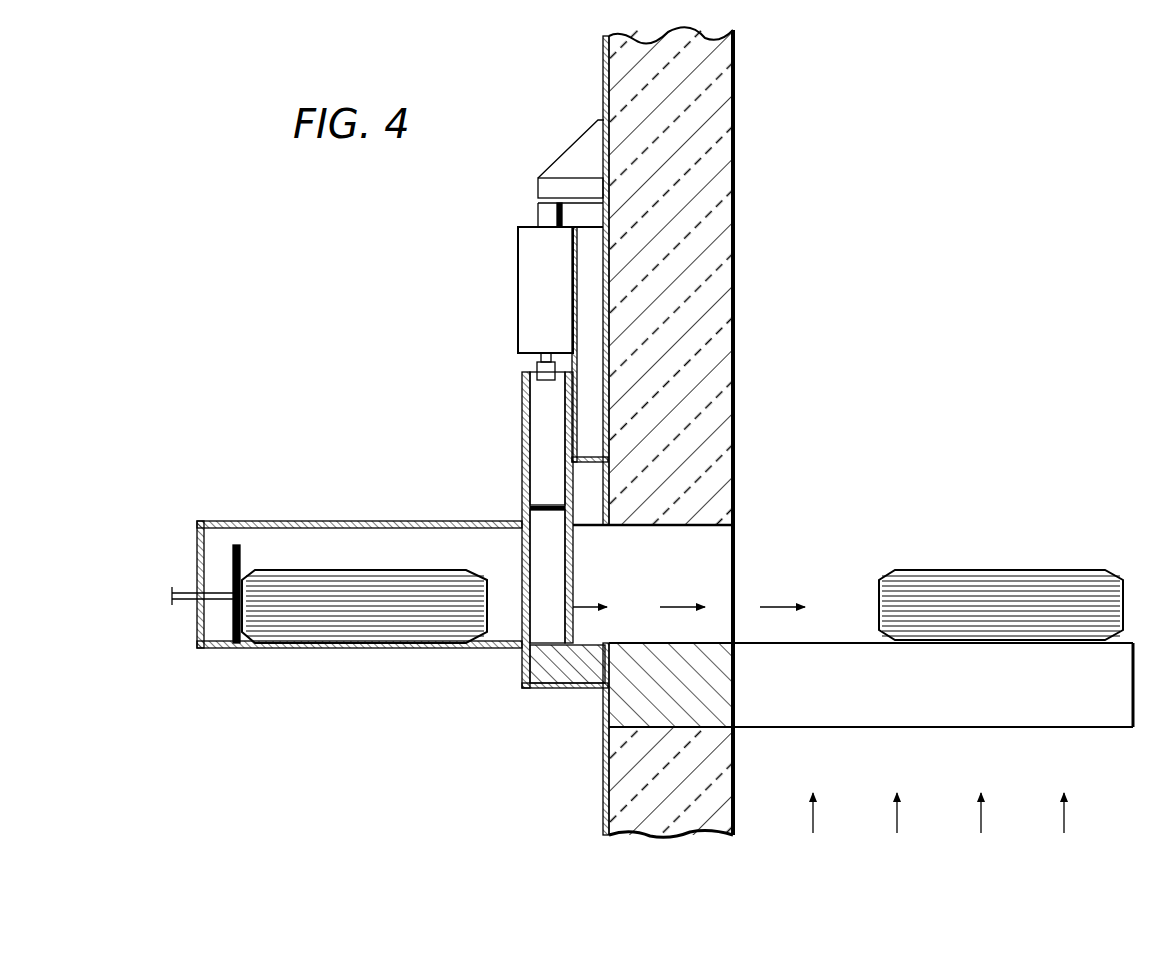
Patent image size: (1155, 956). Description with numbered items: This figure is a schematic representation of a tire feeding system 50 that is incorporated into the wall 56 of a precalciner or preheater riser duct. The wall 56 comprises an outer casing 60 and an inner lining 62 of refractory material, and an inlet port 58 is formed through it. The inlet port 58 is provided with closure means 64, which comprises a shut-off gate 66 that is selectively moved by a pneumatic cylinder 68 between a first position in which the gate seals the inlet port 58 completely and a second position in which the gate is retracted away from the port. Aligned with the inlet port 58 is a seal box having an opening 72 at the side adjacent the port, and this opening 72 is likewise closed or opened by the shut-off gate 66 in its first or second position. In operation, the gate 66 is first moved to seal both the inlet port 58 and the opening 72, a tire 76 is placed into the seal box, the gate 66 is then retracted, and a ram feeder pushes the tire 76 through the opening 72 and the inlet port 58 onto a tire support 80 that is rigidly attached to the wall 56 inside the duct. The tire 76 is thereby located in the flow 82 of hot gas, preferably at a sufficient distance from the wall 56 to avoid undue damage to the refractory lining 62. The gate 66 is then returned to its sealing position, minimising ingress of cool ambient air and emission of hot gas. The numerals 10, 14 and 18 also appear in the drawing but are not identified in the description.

The sheet feeding apparatus 10 is at (310, 493).
The housing 14 is at (350, 520).
The pusher rod 18 is at (190, 600).
The tire feeding system 50 is at (345, 370).
The wall 56 is at (738, 165).
The inlet port 58 is at (715, 550).
The outer casing 60 is at (604, 80).
The inner lining 62 is at (722, 270).
The closure means 64 is at (512, 330).
The shut-off gate 66 is at (535, 430).
The pneumatic cylinder 68 is at (532, 272).
The opening 72 is at (522, 568).
The tire 76 is at (328, 620).
The tire support 80 is at (1032, 704).
The flow of gas 82 is at (1063, 847).